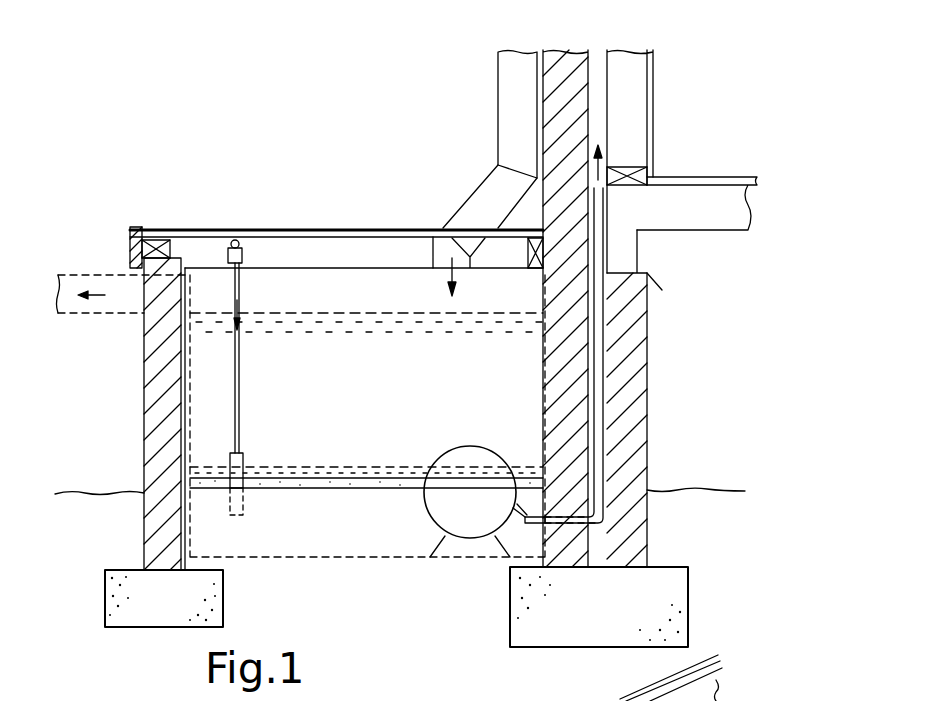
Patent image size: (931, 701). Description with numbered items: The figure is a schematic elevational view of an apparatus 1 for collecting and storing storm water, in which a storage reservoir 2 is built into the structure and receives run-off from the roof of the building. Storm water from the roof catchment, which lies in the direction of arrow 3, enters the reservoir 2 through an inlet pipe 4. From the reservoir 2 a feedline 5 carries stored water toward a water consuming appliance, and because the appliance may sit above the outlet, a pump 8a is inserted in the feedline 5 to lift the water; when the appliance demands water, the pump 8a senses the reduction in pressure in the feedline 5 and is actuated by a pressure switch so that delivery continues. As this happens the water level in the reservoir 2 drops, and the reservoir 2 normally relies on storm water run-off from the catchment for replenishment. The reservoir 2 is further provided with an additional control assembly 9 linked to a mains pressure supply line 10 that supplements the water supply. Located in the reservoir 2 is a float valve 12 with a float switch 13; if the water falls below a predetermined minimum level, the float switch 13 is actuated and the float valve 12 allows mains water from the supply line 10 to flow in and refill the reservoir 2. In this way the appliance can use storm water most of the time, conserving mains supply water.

The apparatus 1 is at (249, 108).
The storage reservoir 2 is at (365, 300).
The arrow 3 is at (527, 12).
The inlet pipe 4 is at (505, 101).
The feedline 5 is at (532, 525).
The pump 8a is at (437, 508).
The control assembly 9 is at (210, 228).
The mains pressure supply line 10 is at (243, 244).
The float valve 12 is at (230, 390).
The float switch 13 is at (243, 464).